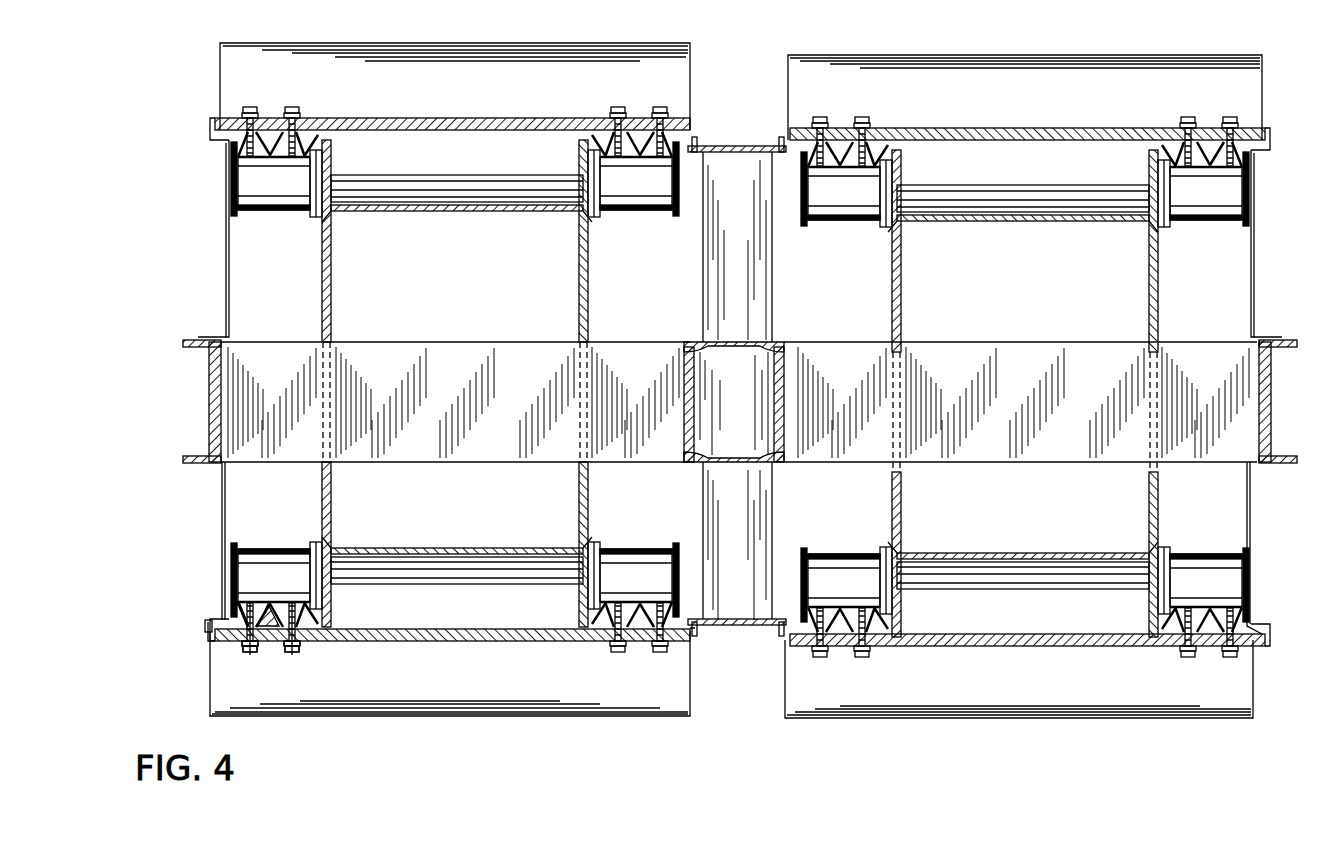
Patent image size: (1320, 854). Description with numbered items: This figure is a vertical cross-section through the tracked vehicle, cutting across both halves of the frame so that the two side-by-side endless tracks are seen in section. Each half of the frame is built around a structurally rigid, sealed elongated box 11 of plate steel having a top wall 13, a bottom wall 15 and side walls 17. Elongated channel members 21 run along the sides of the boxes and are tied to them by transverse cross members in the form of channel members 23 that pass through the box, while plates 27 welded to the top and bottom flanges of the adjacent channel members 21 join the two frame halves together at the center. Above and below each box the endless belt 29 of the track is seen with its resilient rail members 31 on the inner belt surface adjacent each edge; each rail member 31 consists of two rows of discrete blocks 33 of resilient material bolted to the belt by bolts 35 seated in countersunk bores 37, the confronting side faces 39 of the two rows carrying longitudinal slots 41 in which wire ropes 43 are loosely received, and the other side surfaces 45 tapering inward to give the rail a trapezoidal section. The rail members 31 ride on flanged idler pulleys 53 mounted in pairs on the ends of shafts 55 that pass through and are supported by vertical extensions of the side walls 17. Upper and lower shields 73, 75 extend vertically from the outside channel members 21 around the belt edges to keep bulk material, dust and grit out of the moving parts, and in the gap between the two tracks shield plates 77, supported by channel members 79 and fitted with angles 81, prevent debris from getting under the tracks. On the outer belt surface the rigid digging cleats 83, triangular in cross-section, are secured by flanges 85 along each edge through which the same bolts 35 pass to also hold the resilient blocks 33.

The elongated box 11 is at (318, 290).
The top wall 13 is at (425, 212).
The bottom wall 15 is at (428, 553).
The side walls 17 is at (322, 496).
The channel members 21 is at (210, 410).
The channel members 23 is at (630, 358).
The plates 27 is at (755, 345).
The endless belt 29 is at (440, 118).
The resilient rail members 31 is at (242, 164).
The discrete blocks 33 is at (230, 622).
The bolts 35 is at (248, 654).
The countersunk bores 37 is at (238, 598).
The confronting side faces 39 is at (262, 602).
The longitudinal slots 41 is at (268, 650).
The wire ropes 43 is at (262, 120).
The other side surfaces 45 is at (215, 624).
The flanged idler pulleys 53 is at (262, 212).
The shafts 55 is at (455, 176).
The upper shield 73 is at (226, 278).
The lower shield 75 is at (222, 522).
The shield plates 77 is at (722, 146).
The channel members 79 is at (772, 290).
The angles 81 is at (696, 138).
The cleats 83 is at (205, 702).
The flanges 85 is at (207, 632).